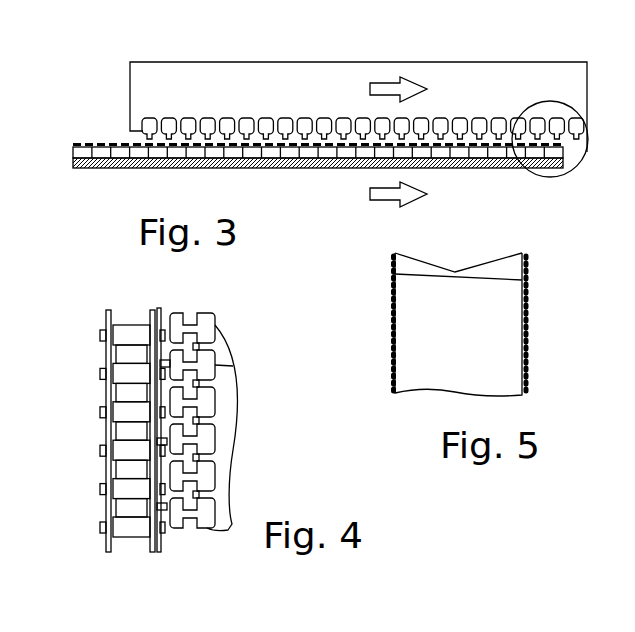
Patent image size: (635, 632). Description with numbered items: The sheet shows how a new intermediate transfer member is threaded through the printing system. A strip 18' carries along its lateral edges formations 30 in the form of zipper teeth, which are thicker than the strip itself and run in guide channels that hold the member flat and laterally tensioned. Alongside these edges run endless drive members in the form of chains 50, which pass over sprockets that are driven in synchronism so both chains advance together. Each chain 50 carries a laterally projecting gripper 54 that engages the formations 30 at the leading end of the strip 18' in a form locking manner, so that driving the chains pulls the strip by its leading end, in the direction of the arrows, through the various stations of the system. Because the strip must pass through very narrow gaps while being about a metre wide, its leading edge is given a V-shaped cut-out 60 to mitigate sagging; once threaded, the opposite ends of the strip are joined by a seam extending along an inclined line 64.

In FIG. 3, the strip 18' is at (359, 90).
In FIG. 5, the strip 18' is at (427, 324).
In FIG. 3, the formations 30 is at (338, 127).
In FIG. 4, the formations 30 is at (207, 437).
In FIG. 5, the formations 30 is at (525, 280).
In FIG. 3, the chains 50 is at (363, 163).
In FIG. 4, the chains 50 is at (123, 342).
In FIG. 4, the gripper 54 is at (165, 497).
In FIG. 5, the V-shaped cut-out 60 is at (438, 267).
In FIG. 5, the inclined line 64 is at (428, 277).